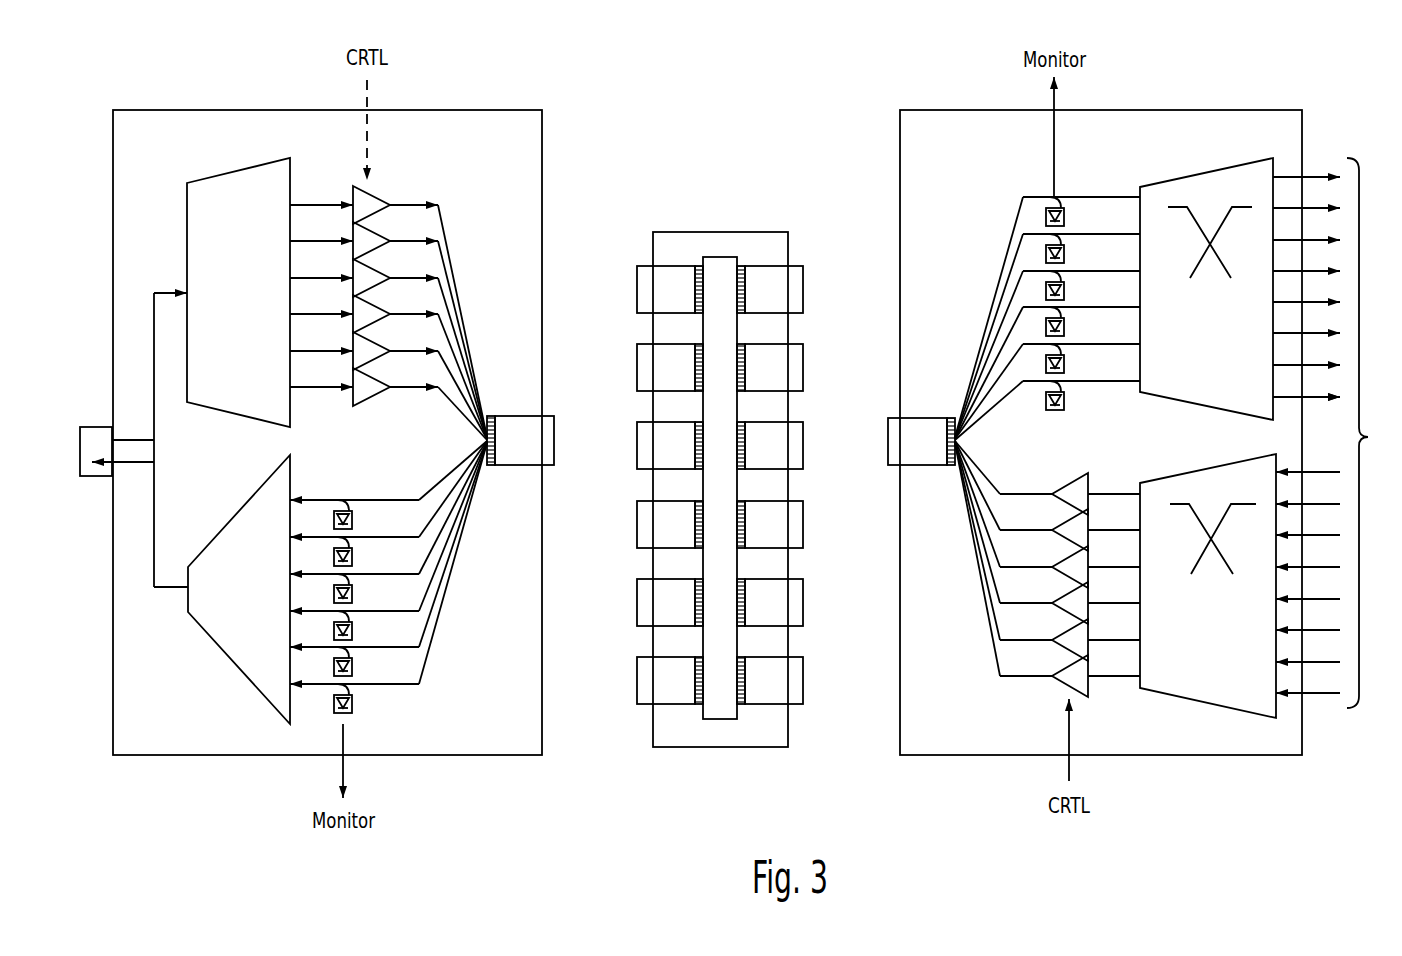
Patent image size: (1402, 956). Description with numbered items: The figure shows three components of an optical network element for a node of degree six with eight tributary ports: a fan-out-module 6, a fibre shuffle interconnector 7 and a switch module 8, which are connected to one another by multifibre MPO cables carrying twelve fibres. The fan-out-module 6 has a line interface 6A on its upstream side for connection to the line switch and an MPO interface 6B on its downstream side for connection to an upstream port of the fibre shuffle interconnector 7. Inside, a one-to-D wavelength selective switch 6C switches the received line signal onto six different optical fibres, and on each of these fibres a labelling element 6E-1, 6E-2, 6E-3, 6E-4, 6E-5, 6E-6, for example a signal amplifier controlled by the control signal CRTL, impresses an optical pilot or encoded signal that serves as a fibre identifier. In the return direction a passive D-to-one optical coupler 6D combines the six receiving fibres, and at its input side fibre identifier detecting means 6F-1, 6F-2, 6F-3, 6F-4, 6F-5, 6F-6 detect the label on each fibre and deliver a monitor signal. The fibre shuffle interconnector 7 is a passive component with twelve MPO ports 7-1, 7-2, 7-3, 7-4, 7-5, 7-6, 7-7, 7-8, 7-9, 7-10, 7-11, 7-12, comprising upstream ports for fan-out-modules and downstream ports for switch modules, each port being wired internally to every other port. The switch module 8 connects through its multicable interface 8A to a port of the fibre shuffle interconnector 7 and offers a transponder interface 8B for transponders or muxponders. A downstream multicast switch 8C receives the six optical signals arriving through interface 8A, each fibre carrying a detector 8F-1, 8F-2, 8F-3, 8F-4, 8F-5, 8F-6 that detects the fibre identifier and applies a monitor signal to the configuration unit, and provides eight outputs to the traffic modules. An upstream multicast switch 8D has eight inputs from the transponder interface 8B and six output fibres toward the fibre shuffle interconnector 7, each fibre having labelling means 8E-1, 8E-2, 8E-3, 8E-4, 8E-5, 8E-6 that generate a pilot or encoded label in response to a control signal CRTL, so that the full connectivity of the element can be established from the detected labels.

The fan-out-module 6 is at (517, 122).
The line interface 6A is at (95, 478).
The interface 6B is at (515, 453).
The 1:D wavelength selective switch 6C is at (251, 378).
The D:1 optical coupler 6D is at (259, 649).
The labelling element 6E-1 is at (366, 204).
The labelling element 6E-2 is at (366, 240).
The labelling element 6E-3 is at (366, 277).
The labelling element 6E-4 is at (366, 313).
The labelling element 6E-5 is at (366, 350).
The labelling element 6E-6 is at (366, 386).
The fibre identifier detecting means 6F-1 is at (352, 519).
The fibre identifier detecting means 6F-2 is at (352, 556).
The fibre identifier detecting means 6F-3 is at (352, 593).
The fibre identifier detecting means 6F-4 is at (352, 630).
The fibre identifier detecting means 6F-5 is at (352, 666).
The fibre identifier detecting means 6F-6 is at (352, 703).
The fibre shuffle interconnector 7 is at (762, 732).
The port 7-1 is at (647, 292).
The port 7-2 is at (647, 370).
The port 7-3 is at (647, 448).
The port 7-4 is at (647, 527).
The port 7-5 is at (647, 605).
The port 7-6 is at (647, 683).
The port 7-7 is at (792, 292).
The port 7-8 is at (792, 370).
The port 7-9 is at (792, 448).
The port 7-10 is at (792, 527).
The port 7-11 is at (792, 605).
The port 7-12 is at (792, 683).
The switch module 8 is at (1277, 122).
The interface 8A is at (927, 454).
The transponder interface 8B is at (1372, 433).
The downstream multicast switch 8C is at (1223, 382).
The upstream multicast switch 8D is at (1225, 677).
The labelling means 8E-1 is at (1075, 488).
The labelling means 8E-2 is at (1075, 524).
The labelling means 8E-3 is at (1075, 561).
The labelling means 8E-4 is at (1075, 597).
The labelling means 8E-5 is at (1075, 634).
The labelling means 8E-6 is at (1075, 670).
The detector 8F-1 is at (1064, 216).
The detector 8F-2 is at (1064, 253).
The detector 8F-3 is at (1064, 290).
The detector 8F-4 is at (1064, 326).
The detector 8F-5 is at (1064, 363).
The detector 8F-6 is at (1064, 400).